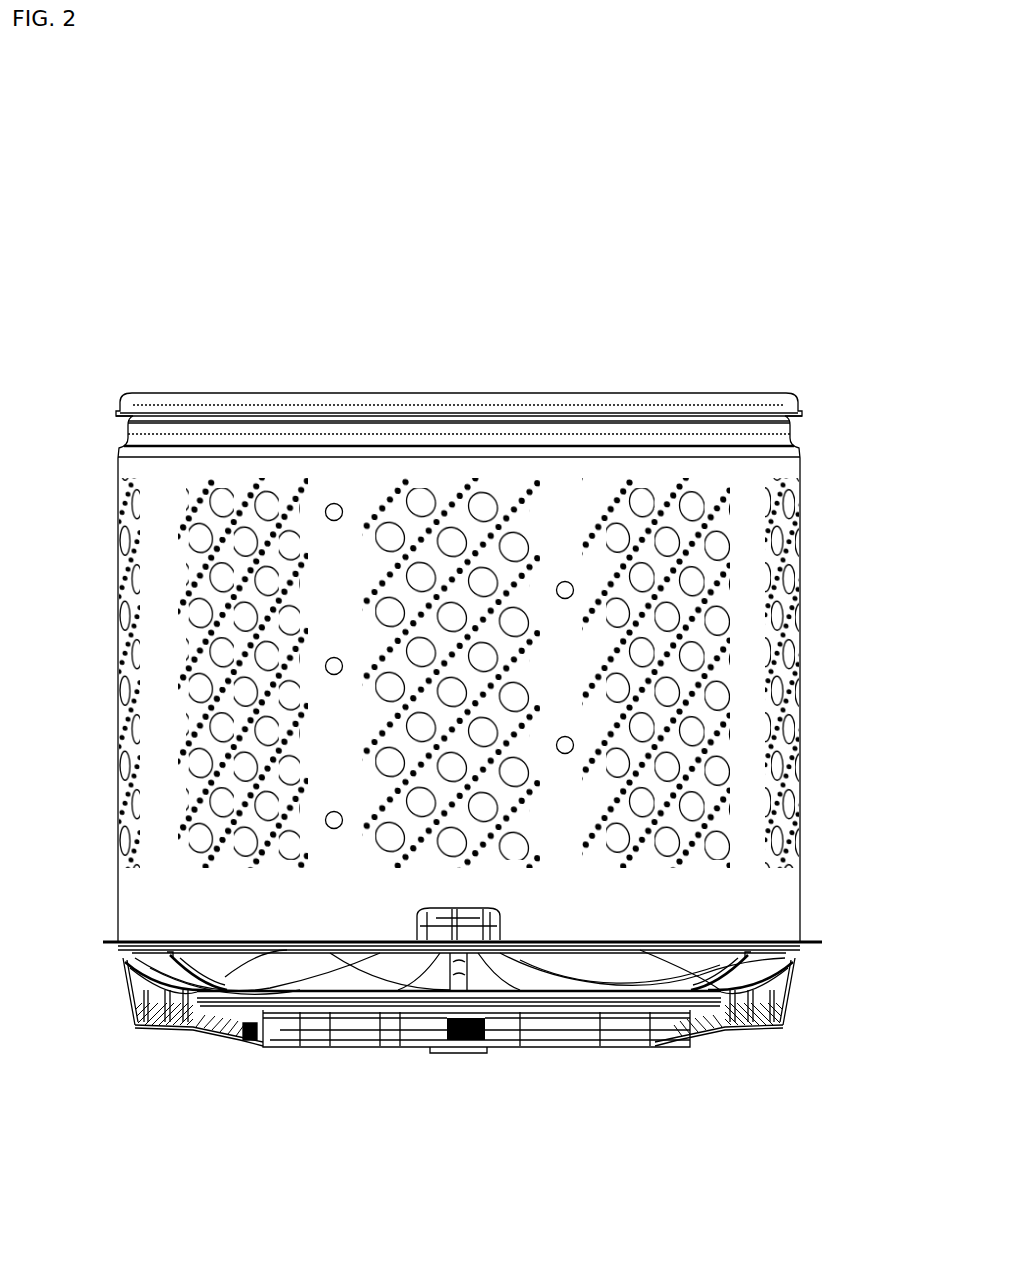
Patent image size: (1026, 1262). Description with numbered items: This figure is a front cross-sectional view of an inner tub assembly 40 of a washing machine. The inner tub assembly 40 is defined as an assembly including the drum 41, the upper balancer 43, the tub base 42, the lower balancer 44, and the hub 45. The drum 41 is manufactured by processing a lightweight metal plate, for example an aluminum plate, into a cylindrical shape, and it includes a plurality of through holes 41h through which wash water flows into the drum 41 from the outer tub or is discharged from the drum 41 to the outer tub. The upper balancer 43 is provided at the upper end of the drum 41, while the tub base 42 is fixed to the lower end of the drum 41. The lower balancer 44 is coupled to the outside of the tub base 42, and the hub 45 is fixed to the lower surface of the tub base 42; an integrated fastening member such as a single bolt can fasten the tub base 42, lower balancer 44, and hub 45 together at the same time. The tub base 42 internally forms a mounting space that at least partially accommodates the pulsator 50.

The inner tub assembly 40 is at (118, 226).
The drum 41 is at (770, 900).
The through holes 41h is at (785, 496).
The tub base 42 is at (797, 952).
The upper balancer 43 is at (805, 385).
The lower balancer 44 is at (792, 1027).
The hub 45 is at (317, 1050).
The pulsator 50 is at (245, 977).